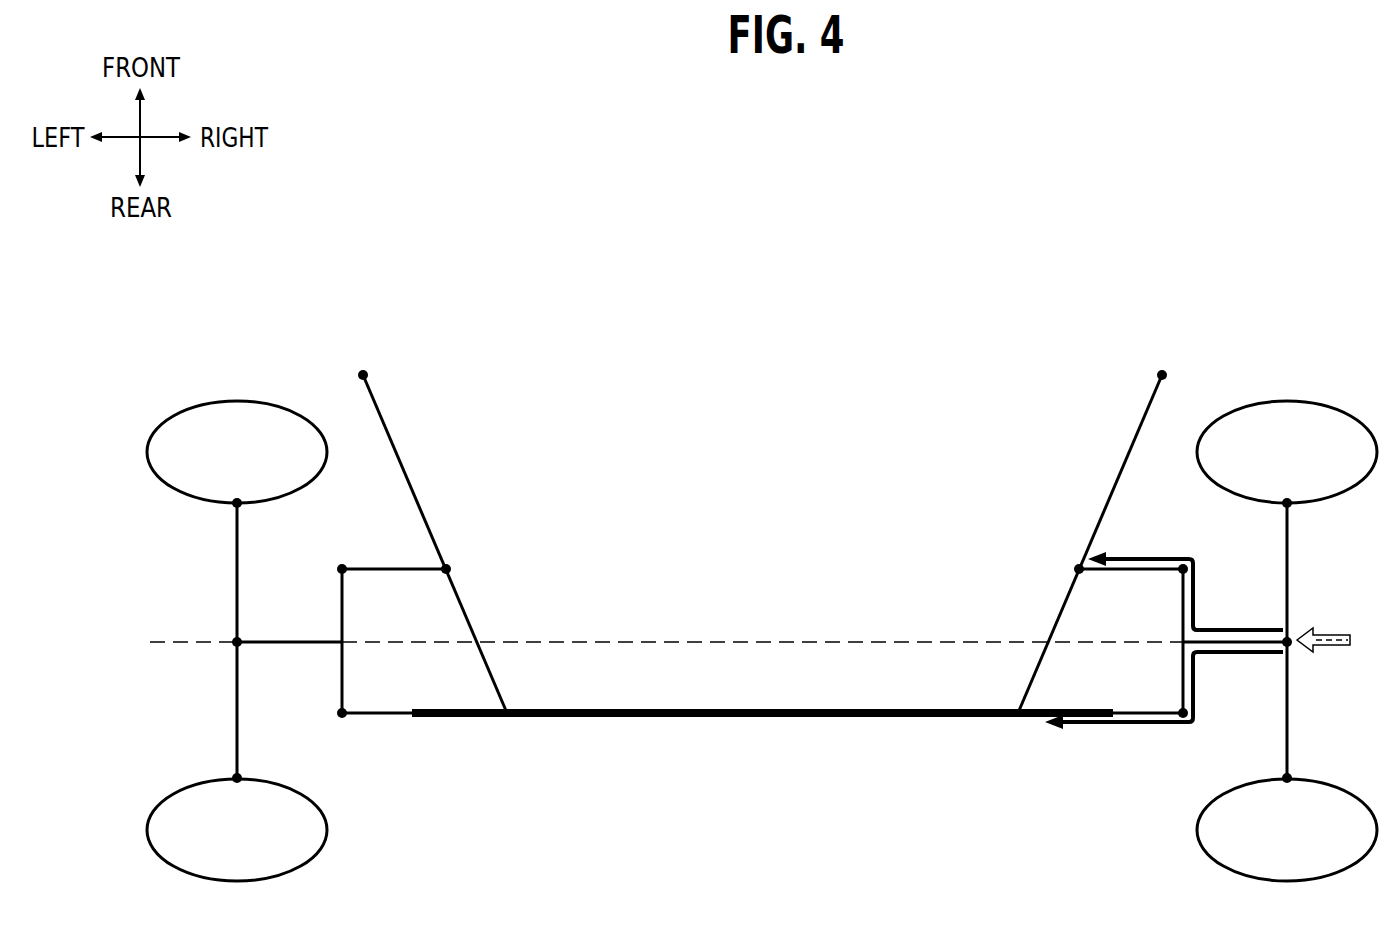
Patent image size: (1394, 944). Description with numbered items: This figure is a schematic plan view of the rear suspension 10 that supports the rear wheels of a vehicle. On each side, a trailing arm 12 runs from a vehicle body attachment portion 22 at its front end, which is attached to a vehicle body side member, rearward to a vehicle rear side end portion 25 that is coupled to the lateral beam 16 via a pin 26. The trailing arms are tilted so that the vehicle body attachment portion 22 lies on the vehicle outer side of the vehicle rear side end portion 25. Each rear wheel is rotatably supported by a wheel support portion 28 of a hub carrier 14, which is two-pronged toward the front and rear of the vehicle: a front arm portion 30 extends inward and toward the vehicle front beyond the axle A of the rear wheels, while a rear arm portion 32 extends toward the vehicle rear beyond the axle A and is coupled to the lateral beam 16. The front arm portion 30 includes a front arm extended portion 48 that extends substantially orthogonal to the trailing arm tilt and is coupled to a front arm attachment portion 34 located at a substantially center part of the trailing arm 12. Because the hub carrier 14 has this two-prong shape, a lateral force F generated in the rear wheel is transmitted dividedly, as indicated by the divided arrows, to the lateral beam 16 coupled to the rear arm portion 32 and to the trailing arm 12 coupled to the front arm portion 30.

The rear suspension 10 is at (885, 183).
The trailing arm 12 is at (418, 481).
The hub carrier 14 is at (322, 597).
The lateral beam 16 is at (737, 730).
The vehicle body attachment portion 22 is at (363, 375).
The vehicle rear side end portion 25 is at (494, 728).
The pin 26 is at (507, 717).
The wheel support portion 28 is at (228, 652).
The front arm portion 30 is at (393, 551).
The rear arm portion 32 is at (393, 733).
The front arm attachment portion 34 is at (446, 569).
The front arm extended portion 48 is at (415, 571).
The axle A is at (1353, 630).
The lateral force F is at (1336, 640).